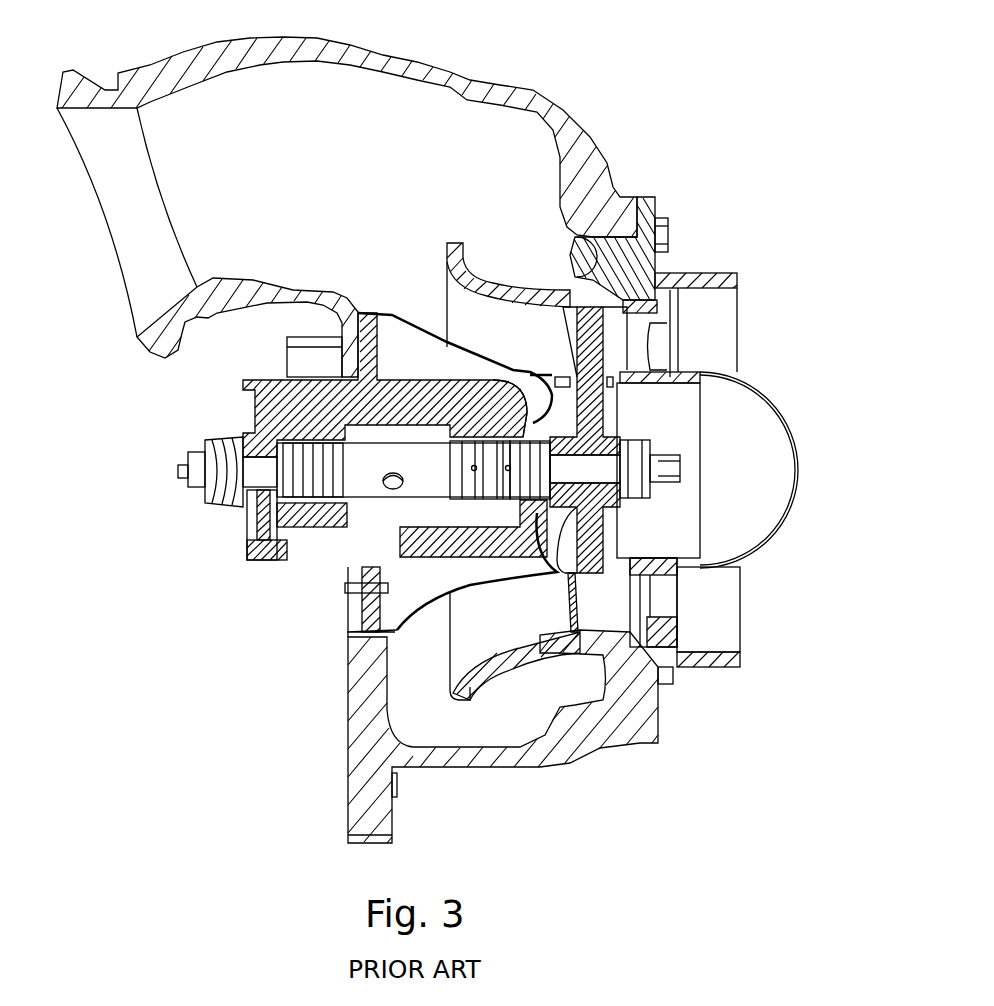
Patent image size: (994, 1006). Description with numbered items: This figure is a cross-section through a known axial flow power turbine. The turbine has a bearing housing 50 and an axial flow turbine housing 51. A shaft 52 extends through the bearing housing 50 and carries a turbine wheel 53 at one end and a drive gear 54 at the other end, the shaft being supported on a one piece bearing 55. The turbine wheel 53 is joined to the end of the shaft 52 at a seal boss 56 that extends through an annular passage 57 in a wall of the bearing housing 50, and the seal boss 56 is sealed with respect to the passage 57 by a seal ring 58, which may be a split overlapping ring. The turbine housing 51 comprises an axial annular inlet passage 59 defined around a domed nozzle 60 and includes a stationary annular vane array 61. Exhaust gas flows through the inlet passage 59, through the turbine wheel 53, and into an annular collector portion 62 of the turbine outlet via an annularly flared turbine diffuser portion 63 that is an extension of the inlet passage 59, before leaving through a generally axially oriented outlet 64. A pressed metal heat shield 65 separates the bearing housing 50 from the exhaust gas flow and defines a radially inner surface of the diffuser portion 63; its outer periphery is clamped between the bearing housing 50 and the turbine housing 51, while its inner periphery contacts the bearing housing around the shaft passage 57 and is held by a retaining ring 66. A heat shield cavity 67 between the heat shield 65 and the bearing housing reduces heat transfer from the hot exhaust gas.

The bearing housing 50 is at (290, 398).
The axial flow turbine housing 51 is at (522, 758).
The shaft 52 is at (593, 433).
The turbine wheel 53 is at (590, 613).
The drive gear 54 is at (208, 500).
The one piece bearing 55 is at (280, 503).
The seal boss 56 is at (535, 475).
The annular passage 57 is at (510, 503).
The seal ring 58 is at (523, 420).
The axial annular inlet passage 59 is at (715, 327).
The domed nozzle 60 is at (772, 438).
The stationary annular vane array 61 is at (657, 333).
The annular collector portion 62 is at (417, 692).
The turbine diffuser portion 63 is at (475, 637).
The outlet 64 is at (185, 197).
The heat shield 65 is at (403, 320).
The retaining ring 66 is at (533, 423).
The heat shield cavity 67 is at (413, 350).